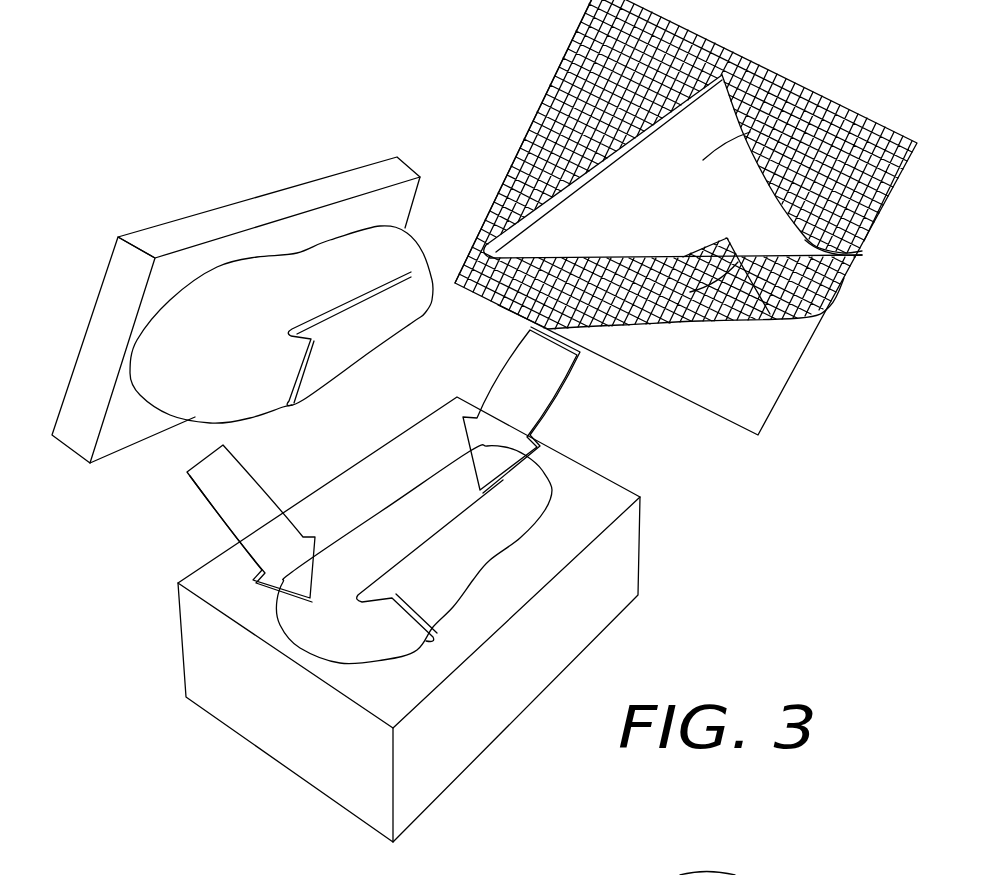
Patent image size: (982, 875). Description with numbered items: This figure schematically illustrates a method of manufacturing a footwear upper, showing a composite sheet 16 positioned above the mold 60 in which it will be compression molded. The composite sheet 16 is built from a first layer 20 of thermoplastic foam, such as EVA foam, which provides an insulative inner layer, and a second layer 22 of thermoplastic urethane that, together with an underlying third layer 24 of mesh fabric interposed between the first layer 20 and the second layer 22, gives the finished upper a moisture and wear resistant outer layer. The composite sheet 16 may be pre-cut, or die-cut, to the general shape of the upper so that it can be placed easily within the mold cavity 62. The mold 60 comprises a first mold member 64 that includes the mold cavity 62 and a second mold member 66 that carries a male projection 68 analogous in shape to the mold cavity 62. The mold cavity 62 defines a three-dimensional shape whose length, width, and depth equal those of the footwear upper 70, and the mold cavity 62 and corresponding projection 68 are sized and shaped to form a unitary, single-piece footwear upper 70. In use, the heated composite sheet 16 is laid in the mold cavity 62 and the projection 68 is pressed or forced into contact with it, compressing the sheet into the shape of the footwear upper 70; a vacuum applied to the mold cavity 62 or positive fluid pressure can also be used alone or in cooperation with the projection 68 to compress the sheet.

The composite sheet 16 is at (677, 217).
The first layer 20 is at (750, 377).
The second layer 22 is at (793, 72).
The third layer 24 is at (823, 290).
The mold 60 is at (371, 499).
The mold cavity 62 is at (522, 495).
The first mold member 64 is at (439, 619).
The second mold member 66 is at (242, 310).
The projection 68 is at (248, 402).
The footwear upper 70 is at (727, 865).